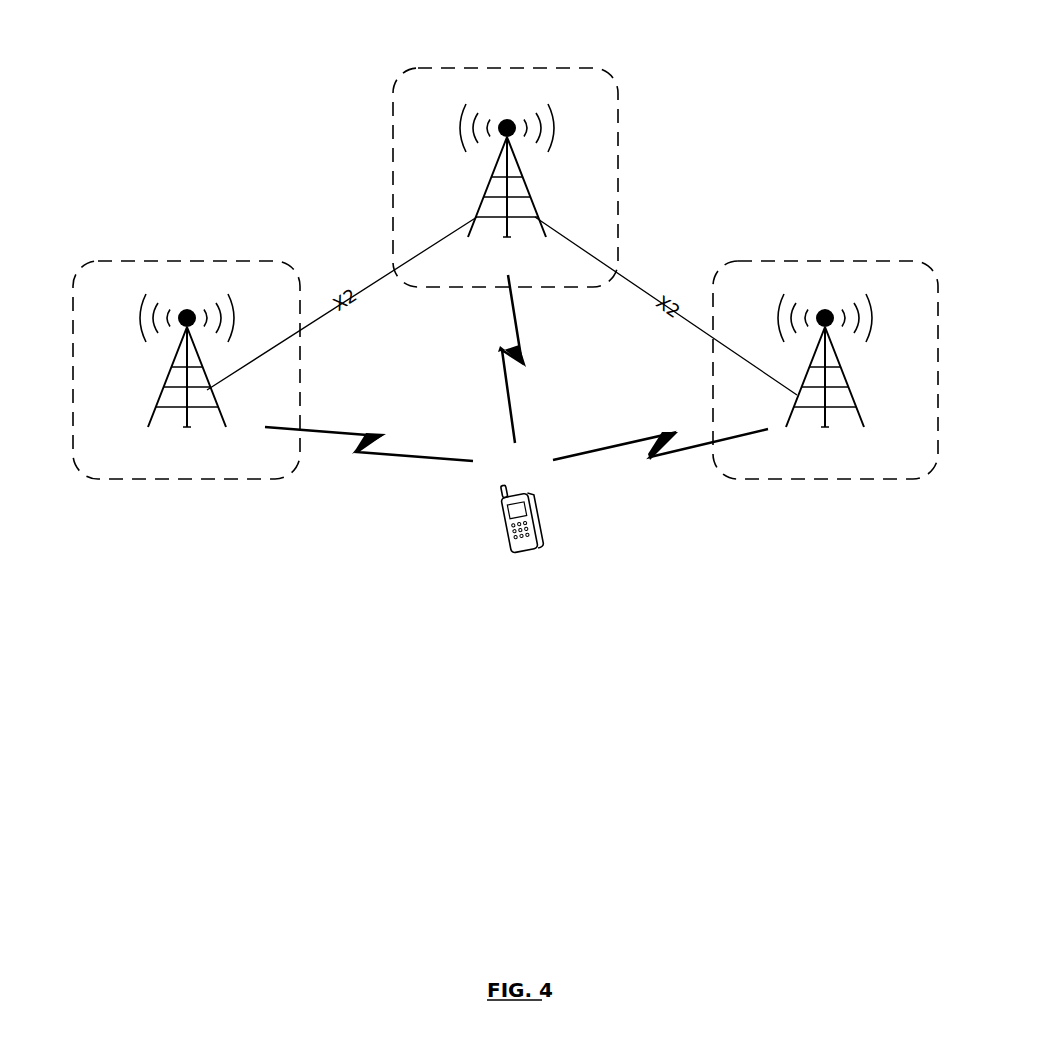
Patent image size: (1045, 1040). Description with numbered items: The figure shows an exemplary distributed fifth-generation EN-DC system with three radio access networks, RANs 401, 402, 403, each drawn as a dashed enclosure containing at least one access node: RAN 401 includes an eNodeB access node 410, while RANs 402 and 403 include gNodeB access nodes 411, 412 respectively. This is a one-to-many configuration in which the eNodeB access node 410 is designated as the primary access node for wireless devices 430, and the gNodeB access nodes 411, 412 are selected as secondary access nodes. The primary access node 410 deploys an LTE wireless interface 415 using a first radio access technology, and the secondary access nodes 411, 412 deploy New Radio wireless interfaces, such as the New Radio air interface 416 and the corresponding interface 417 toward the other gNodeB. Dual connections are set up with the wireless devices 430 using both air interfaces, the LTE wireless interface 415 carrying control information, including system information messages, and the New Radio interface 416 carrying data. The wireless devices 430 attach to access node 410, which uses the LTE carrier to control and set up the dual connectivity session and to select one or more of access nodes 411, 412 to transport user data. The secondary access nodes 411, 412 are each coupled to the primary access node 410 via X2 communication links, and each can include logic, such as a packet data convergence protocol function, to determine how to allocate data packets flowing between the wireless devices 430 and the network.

The RAN 401 is at (437, 68).
The RAN 402 is at (125, 261).
The RAN 403 is at (830, 261).
The eNodeB access node 410 is at (490, 200).
The gNodeB access node 411 is at (162, 408).
The gNodeB access node 412 is at (847, 403).
The 4G wireless interface 415 is at (500, 353).
The 5G NR air interface 416 is at (400, 457).
The wireless link to gNB 417 is at (650, 440).
The wireless devices 430 is at (503, 540).